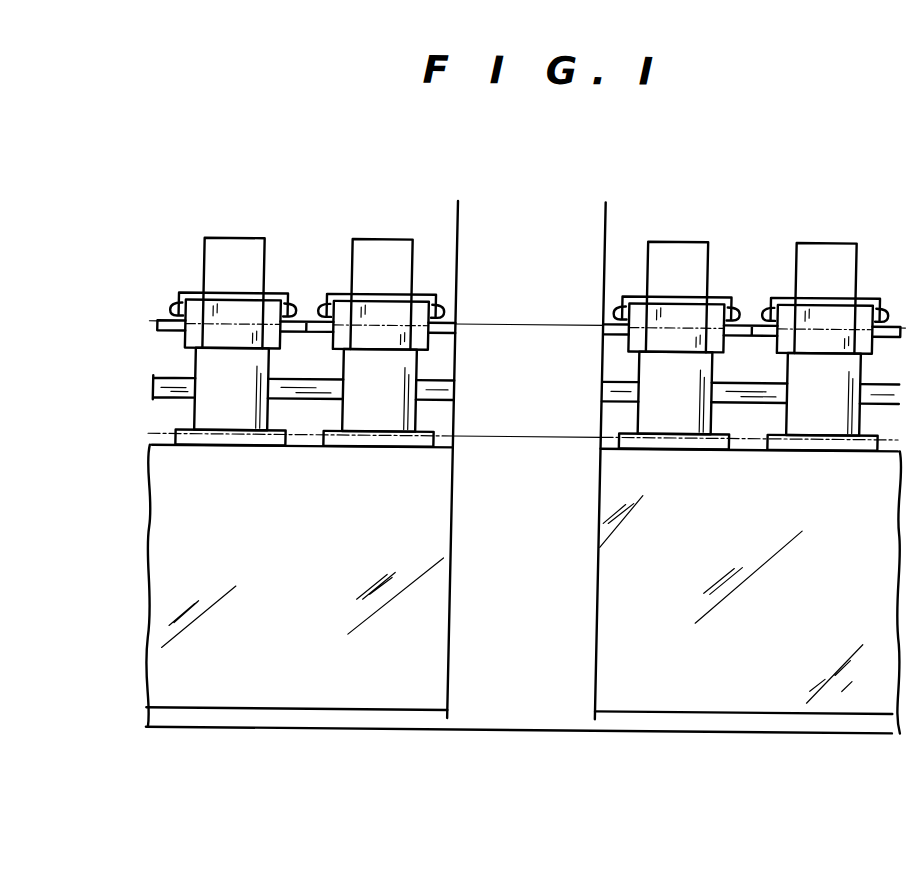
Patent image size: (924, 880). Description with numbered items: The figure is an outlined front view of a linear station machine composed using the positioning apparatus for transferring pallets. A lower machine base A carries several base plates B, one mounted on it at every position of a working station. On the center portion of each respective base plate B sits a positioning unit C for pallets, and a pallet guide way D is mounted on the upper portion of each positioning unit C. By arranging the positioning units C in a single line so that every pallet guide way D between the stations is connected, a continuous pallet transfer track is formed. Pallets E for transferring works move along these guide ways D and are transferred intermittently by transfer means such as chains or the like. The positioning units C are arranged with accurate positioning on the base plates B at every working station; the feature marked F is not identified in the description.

The lower machine base A is at (340, 698).
The base plate B is at (835, 488).
The positioning unit C is at (790, 311).
The pallet guide way D is at (607, 317).
The pallet E is at (881, 298).
The shaft axis / coupling line F is at (531, 324).